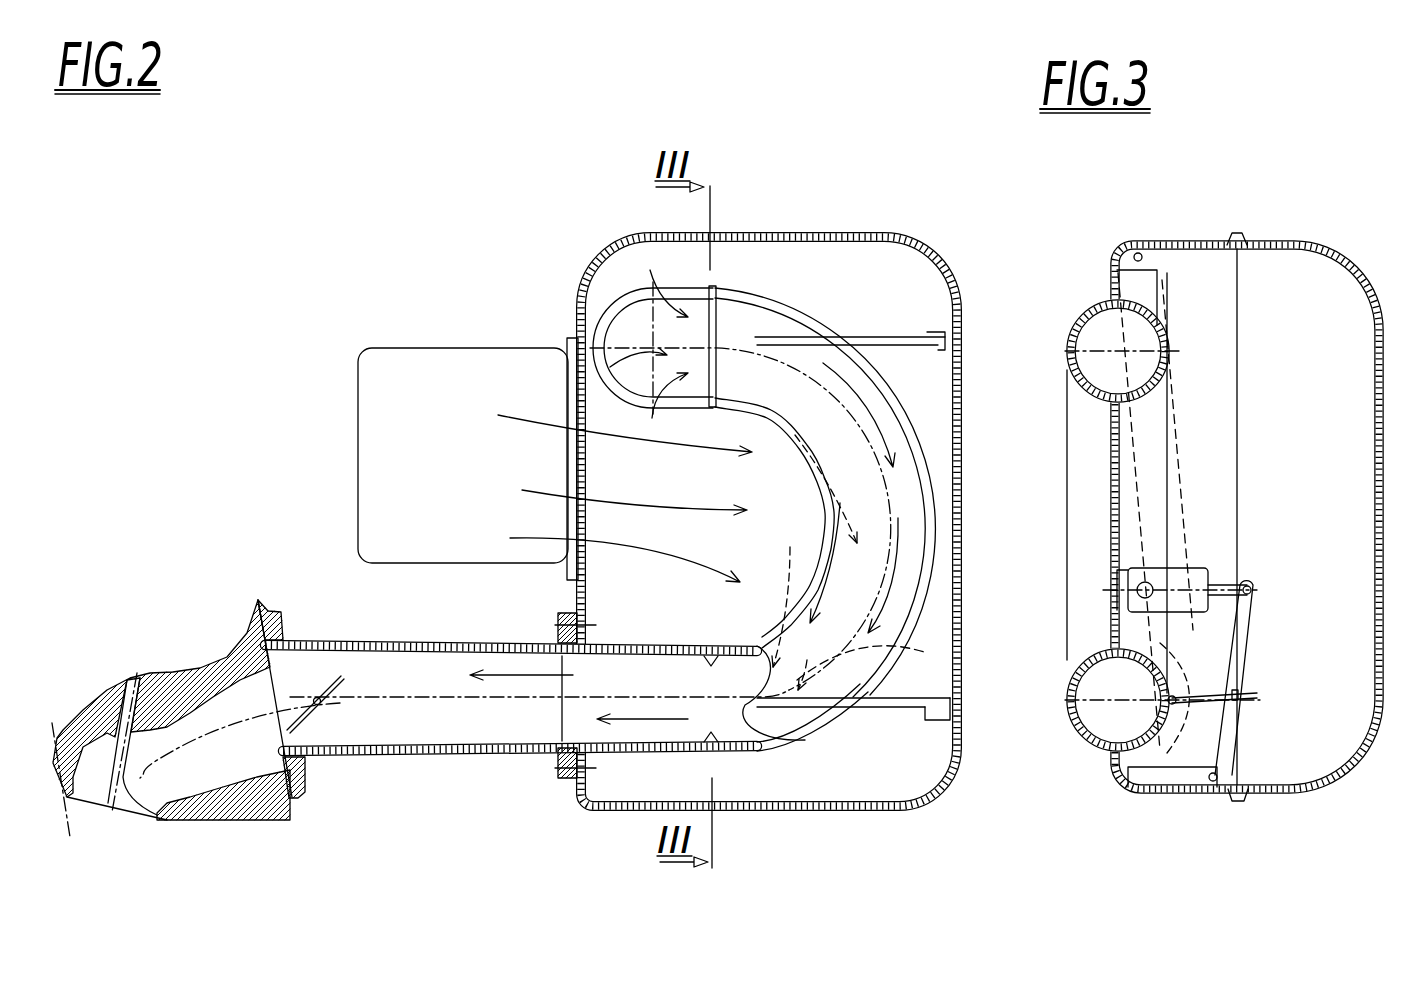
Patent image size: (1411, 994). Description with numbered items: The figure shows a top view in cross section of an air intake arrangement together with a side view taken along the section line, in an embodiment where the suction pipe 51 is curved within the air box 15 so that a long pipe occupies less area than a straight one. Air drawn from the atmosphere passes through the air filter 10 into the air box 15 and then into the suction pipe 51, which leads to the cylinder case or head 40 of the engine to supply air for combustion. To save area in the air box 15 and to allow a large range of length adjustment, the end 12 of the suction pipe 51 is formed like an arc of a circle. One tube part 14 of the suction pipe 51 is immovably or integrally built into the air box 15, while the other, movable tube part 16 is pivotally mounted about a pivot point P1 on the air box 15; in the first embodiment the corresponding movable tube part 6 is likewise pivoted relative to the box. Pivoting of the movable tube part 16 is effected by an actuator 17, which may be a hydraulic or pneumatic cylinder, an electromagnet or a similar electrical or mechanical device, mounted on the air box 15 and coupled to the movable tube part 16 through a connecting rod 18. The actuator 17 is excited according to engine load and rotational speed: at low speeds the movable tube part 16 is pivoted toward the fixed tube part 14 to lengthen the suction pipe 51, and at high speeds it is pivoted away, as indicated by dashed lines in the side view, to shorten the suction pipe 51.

In FIG. 2, the movable tube part 6 is at (797, 722).
In FIG. 2, the air filter 10 is at (411, 375).
In FIG. 2, the end of the suction pipe 12 is at (912, 525).
In FIG. 3, the fixed tube part 14 is at (1064, 574).
In FIG. 2, the air box 15 is at (836, 270).
In FIG. 3, the air box 15 is at (1284, 283).
In FIG. 3, the movable tube part 16 is at (1162, 622).
In FIG. 3, the actuator 17 is at (1185, 580).
In FIG. 3, the connecting rod 18 is at (1225, 694).
In FIG. 2, the cylinder case or head 40 is at (242, 803).
In FIG. 2, the suction pipe 51 is at (544, 757).
In FIG. 3, the suction pipe 51 is at (1100, 720).
In FIG. 2, the pivot point P1 is at (937, 335).
In FIG. 3, the pivot point P1 is at (1146, 258).